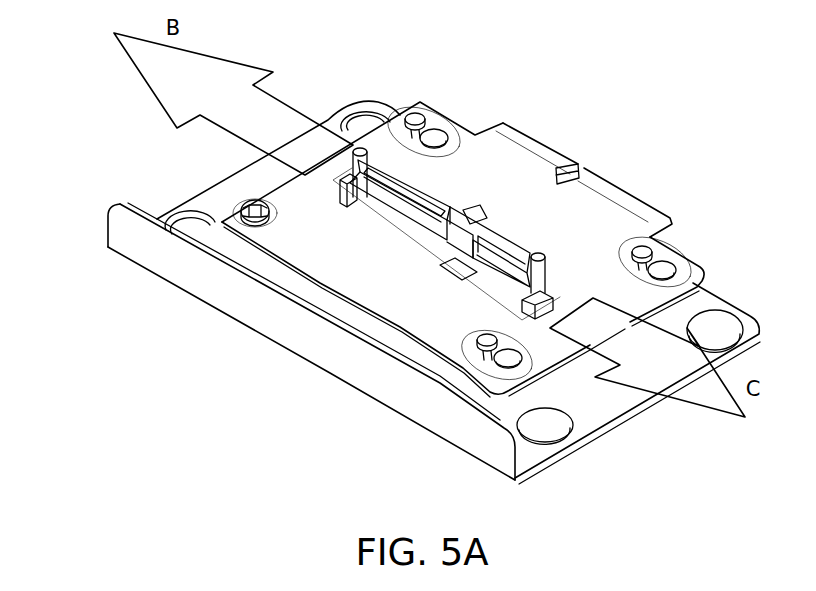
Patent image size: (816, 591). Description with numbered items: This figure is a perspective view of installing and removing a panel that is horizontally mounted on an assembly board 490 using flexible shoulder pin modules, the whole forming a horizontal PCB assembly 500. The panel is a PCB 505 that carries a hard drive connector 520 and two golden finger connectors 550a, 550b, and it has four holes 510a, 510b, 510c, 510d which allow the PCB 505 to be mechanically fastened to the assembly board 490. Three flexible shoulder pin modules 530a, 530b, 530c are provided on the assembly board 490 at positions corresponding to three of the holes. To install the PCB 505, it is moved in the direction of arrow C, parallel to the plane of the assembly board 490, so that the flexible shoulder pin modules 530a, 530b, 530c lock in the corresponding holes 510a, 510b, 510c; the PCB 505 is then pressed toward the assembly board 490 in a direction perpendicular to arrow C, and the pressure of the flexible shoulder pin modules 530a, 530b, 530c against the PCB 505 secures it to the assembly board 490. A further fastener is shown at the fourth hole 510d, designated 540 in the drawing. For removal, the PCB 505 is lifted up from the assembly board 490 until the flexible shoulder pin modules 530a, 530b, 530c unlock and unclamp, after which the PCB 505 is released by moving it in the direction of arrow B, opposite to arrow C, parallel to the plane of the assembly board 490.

The assembly board 490 is at (597, 413).
The horizontal PCB assembly 500 is at (140, 300).
The PCB 505 is at (323, 253).
The hole 510a is at (433, 138).
The hole 510b is at (670, 260).
The hole 510c is at (505, 362).
The hole 510d is at (200, 190).
The hard drive connector 520 is at (372, 150).
The flexible shoulder pin module 530a is at (415, 112).
The flexible shoulder pin module 530b is at (640, 245).
The flexible shoulder pin module 530c is at (470, 338).
The screw 540 is at (242, 200).
The golden finger connector 550a is at (550, 150).
The golden finger connector 550b is at (612, 183).